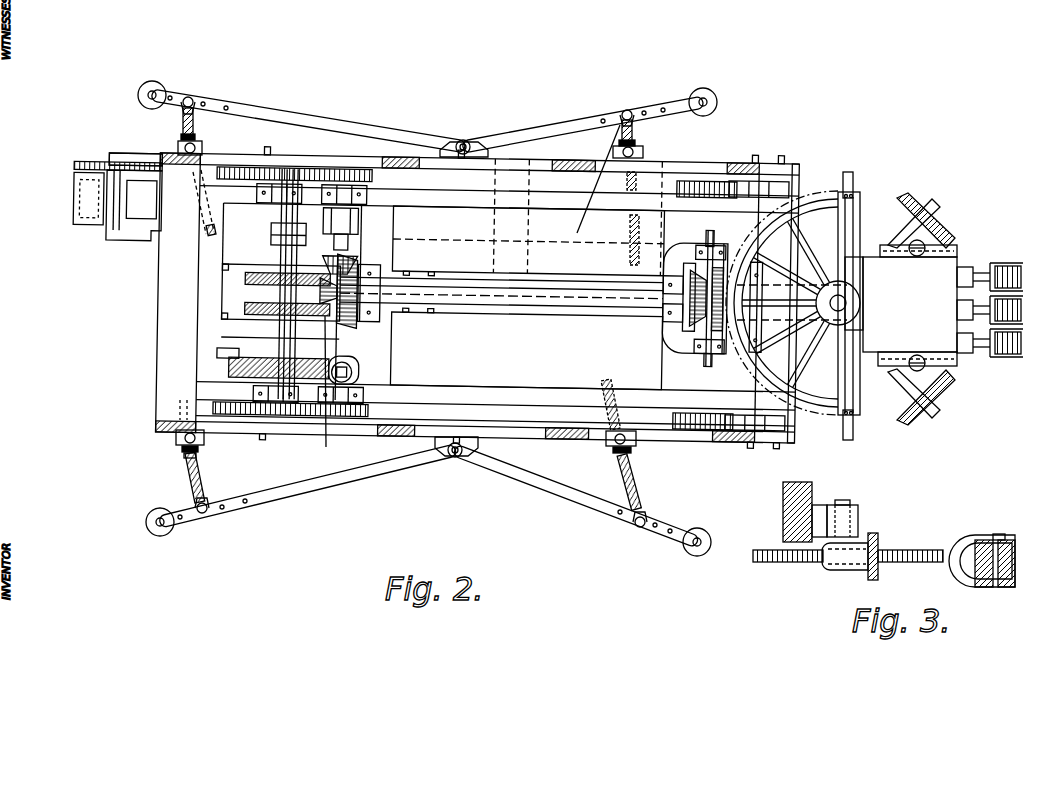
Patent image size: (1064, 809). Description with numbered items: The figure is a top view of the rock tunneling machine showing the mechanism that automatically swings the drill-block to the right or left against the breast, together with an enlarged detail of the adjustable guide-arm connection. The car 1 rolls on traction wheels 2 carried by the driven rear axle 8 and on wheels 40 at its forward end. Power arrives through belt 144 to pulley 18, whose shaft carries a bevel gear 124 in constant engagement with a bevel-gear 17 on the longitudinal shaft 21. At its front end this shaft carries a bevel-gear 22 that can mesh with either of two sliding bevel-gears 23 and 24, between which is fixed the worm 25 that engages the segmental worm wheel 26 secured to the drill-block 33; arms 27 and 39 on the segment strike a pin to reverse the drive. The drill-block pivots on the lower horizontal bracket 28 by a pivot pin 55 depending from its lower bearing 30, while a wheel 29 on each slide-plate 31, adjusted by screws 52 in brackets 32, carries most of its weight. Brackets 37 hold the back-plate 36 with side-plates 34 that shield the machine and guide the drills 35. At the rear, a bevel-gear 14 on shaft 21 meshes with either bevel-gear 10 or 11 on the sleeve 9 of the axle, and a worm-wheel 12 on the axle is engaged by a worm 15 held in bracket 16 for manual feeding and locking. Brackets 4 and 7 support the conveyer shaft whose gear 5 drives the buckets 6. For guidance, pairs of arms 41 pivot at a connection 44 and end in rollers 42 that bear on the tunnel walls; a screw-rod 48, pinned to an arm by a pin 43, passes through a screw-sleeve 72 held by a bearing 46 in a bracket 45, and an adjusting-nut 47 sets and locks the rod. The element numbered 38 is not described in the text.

In FIG. 2, the car 1 is at (178, 180).
In FIG. 3, the car 1 is at (812, 498).
In FIG. 2, the traction wheels 2 is at (242, 175).
In FIG. 2, the bracket 4 is at (112, 156).
In FIG. 2, the gear 5 is at (92, 166).
In FIG. 2, the buckets 6 is at (95, 225).
In FIG. 2, the bracket 7 is at (140, 240).
In FIG. 2, the driven axle 8 is at (280, 208).
In FIG. 2, the sleeve 9 is at (288, 236).
In FIG. 2, the bevel-gear 10 is at (247, 275).
In FIG. 2, the bevel-gear 11 is at (240, 318).
In FIG. 2, the worm-wheel 12 is at (228, 365).
In FIG. 2, the bevel-gear 14 is at (338, 391).
In FIG. 2, the worm 15 is at (347, 380).
In FIG. 2, the bracket 16 is at (492, 468).
In FIG. 2, the bevel-gear 17 is at (352, 378).
In FIG. 2, the pulley 18 is at (400, 160).
In FIG. 2, the shaft 21 is at (540, 300).
In FIG. 2, the bevel-gear 22 is at (618, 390).
In FIG. 2, the bevel-gear 23 is at (700, 312).
In FIG. 2, the bevel-gear 24 is at (710, 262).
In FIG. 2, the worm 25 is at (790, 205).
In FIG. 2, the segmental worm wheel 26 is at (805, 212).
In FIG. 2, the arm 27 is at (850, 176).
In FIG. 2, the lower horizontal bracket 28 is at (830, 282).
In FIG. 2, the wheel 29 is at (885, 240).
In FIG. 2, the lower bearing 30 is at (905, 250).
In FIG. 2, the slide-plate 31 is at (922, 243).
In FIG. 2, the bracket 32 is at (957, 252).
In FIG. 2, the drill-block 33 is at (960, 265).
In FIG. 2, the side-plates 34 is at (1010, 265).
In FIG. 2, the drills 35 is at (1020, 305).
In FIG. 2, the back-plate 36 is at (1010, 318).
In FIG. 2, the brackets 37 is at (1000, 333).
In FIG. 2, the terminal rod 38 is at (975, 352).
In FIG. 2, the arm 39 is at (845, 437).
In FIG. 2, the wheels 40 is at (684, 187).
In FIG. 2, the arms 41 is at (180, 100).
In FIG. 3, the arms 41 is at (980, 545).
In FIG. 2, the roller 42 is at (140, 95).
In FIG. 2, the pin 43 is at (196, 550).
In FIG. 3, the pin 43 is at (1003, 535).
In FIG. 2, the pivotal connection 44 is at (466, 210).
In FIG. 3, the pivotal connection 44 is at (982, 561).
In FIG. 2, the bracket 45 is at (176, 437).
In FIG. 3, the bracket 45 is at (860, 520).
In FIG. 2, the bearing 46 is at (186, 448).
In FIG. 3, the bearing 46 is at (850, 505).
In FIG. 2, the adjusting-nut 47 is at (188, 458).
In FIG. 3, the adjusting-nut 47 is at (876, 540).
In FIG. 2, the screw-rod 48 is at (193, 470).
In FIG. 3, the screw-rod 48 is at (912, 550).
In FIG. 2, the screws 52 is at (955, 245).
In FIG. 2, the pivot pin 55 is at (836, 308).
In FIG. 3, the screw-sleeve 72 is at (810, 562).
In FIG. 2, the bevel gear 124 is at (395, 258).
In FIG. 2, the belt 144 is at (348, 222).